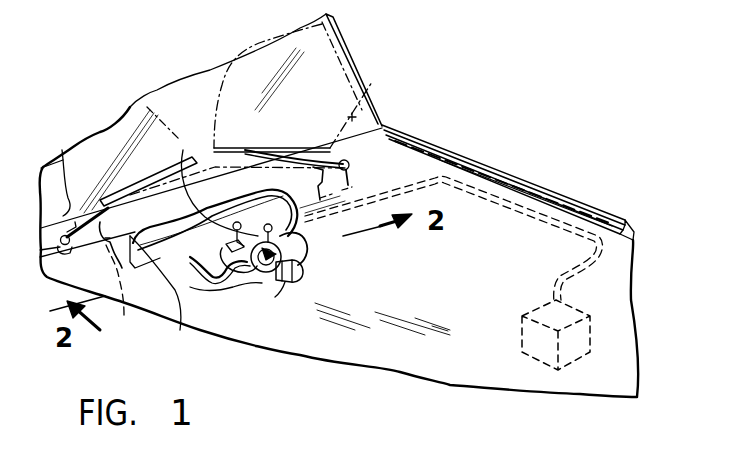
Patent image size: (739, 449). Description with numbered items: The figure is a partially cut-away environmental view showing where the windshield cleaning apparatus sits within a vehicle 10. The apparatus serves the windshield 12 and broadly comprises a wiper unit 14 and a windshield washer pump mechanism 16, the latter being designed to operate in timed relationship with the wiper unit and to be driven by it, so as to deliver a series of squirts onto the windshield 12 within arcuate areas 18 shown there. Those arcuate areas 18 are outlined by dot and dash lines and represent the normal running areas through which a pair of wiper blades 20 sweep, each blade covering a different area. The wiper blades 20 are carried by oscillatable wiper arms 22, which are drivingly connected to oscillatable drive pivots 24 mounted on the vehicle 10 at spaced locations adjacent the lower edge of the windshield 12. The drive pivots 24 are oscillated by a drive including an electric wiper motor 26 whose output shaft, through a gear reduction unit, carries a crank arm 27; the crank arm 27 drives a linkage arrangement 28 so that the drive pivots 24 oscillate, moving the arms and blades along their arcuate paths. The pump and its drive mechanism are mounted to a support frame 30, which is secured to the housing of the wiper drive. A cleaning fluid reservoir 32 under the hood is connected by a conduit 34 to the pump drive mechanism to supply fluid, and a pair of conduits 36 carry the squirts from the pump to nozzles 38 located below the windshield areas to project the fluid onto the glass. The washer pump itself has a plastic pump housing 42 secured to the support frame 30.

The vehicle 10 is at (497, 168).
The windshield 12 is at (364, 126).
The wiper unit 14 is at (258, 295).
The windshield washer pump mechanism 16 is at (295, 250).
The arcuate areas 18 is at (127, 122).
The wiper blades 20 is at (201, 196).
The wiper arms 22 is at (385, 114).
The drive pivots 24 is at (403, 138).
The electric wiper motor 26 is at (262, 283).
The crank arm 27 is at (233, 146).
The linkage arrangement 28 is at (187, 283).
The support frame 30 is at (219, 173).
The cleaning fluid reservoir 32 is at (528, 322).
The conduit 34 is at (580, 218).
The conduits 36 is at (348, 199).
The nozzles 38 is at (103, 226).
The pump housing 42 is at (202, 330).